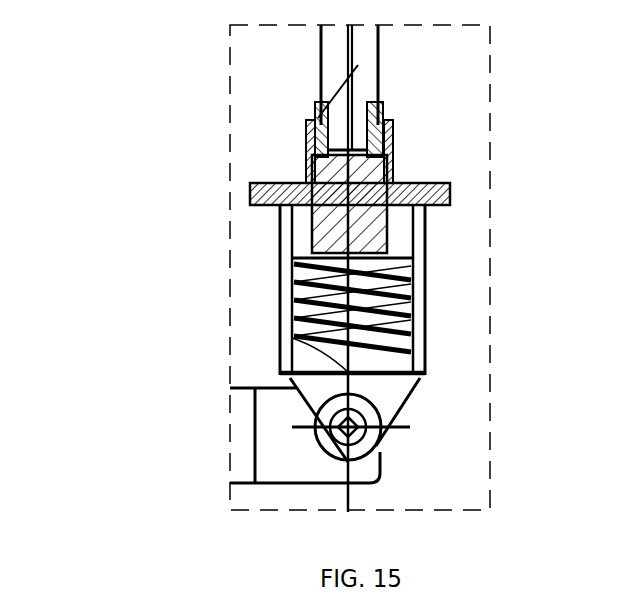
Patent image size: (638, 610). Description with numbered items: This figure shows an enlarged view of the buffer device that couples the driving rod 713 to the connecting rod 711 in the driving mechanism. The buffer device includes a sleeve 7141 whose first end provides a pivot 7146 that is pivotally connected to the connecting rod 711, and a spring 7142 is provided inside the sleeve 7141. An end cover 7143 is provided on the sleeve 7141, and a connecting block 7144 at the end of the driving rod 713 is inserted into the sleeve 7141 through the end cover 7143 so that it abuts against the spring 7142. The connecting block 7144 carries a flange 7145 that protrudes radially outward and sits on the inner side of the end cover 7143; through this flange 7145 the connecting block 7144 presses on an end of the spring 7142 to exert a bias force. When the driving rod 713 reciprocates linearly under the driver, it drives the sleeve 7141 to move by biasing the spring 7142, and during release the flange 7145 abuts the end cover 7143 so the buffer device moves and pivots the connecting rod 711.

The driving rod 713 is at (325, 58).
The end cover 7143 is at (305, 152).
The connecting block 7144 is at (393, 148).
The flange 7145 is at (450, 192).
The sleeve 7141 is at (426, 288).
The spring 7142 is at (278, 271).
The pivot 7146 is at (404, 427).
The connecting rod 711 is at (242, 442).